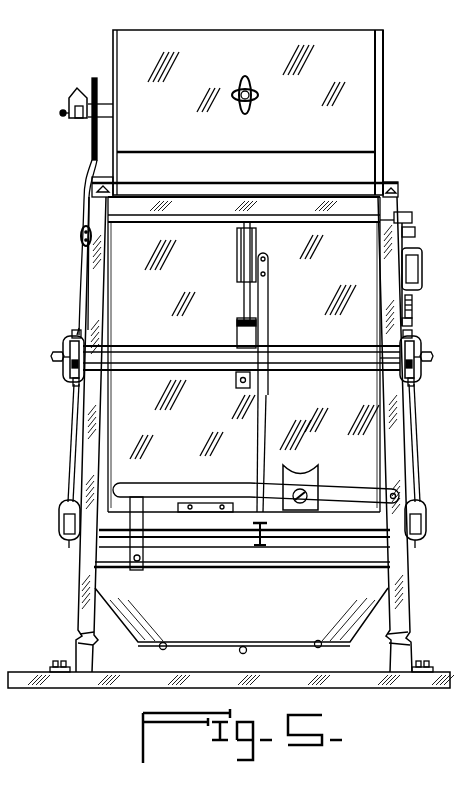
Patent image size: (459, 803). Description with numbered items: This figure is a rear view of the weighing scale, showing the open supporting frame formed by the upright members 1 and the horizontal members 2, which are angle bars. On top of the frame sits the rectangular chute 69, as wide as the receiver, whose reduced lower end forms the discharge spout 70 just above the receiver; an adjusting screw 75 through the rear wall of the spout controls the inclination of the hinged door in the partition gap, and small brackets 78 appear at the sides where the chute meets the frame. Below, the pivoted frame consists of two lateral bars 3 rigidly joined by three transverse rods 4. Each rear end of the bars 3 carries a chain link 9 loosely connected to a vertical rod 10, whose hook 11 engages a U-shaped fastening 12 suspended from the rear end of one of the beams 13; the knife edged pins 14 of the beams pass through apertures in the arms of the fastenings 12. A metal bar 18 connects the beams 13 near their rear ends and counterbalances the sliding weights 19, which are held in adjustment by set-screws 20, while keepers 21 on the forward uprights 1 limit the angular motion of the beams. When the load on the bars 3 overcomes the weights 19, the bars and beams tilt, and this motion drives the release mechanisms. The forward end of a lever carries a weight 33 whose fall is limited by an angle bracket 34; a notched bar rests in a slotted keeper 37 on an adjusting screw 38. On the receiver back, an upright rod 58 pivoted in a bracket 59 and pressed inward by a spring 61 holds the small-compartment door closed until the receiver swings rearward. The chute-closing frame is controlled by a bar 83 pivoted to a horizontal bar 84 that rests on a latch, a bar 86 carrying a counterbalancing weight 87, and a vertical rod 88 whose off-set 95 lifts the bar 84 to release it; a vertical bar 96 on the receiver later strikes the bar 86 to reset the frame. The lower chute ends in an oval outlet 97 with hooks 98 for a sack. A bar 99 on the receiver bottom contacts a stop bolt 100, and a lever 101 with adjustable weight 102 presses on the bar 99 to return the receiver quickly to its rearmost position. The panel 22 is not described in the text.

The upright members 1 is at (80, 606).
The horizontal members 2 is at (212, 206).
The lateral bars 3 is at (63, 535).
The transverse rods 4 is at (332, 530).
The chain link 9 is at (59, 519).
The vertical rod 10 is at (70, 458).
The hook 11 is at (75, 390).
The U-shaped fastening 12 is at (68, 373).
The beams 13 is at (66, 352).
The knife edged pins 14 is at (398, 358).
The metal bar 18 is at (208, 362).
The sliding weights 19 is at (70, 385).
The set-screws 20 is at (52, 357).
The keepers 21 is at (76, 334).
The panel 22 is at (254, 347).
The weight 33 is at (406, 215).
The angle bracket 34 is at (412, 232).
The slotted keeper 37 is at (417, 270).
The adjusting screw 38 is at (412, 301).
The upright rod 58 is at (244, 289).
The bracket 59 is at (238, 256).
The spring 61 is at (237, 330).
The rectangular chute 69 is at (248, 112).
The discharge spout 70 is at (178, 191).
The adjusting screw 75 is at (256, 96).
The bracket 78 is at (107, 185).
The bar 83 is at (86, 165).
The horizontal bar 84 is at (89, 243).
The bar 86 is at (106, 110).
The weight 87 is at (72, 100).
The vertical rod 88 is at (80, 275).
The off-set 95 is at (96, 258).
The vertical bar 96 is at (93, 143).
The outlet 97 is at (241, 617).
The hooks 98 is at (316, 645).
The bar 99 is at (258, 515).
The bolt 100 is at (257, 532).
The lever 101 is at (350, 498).
The adjustable weight 102 is at (298, 470).